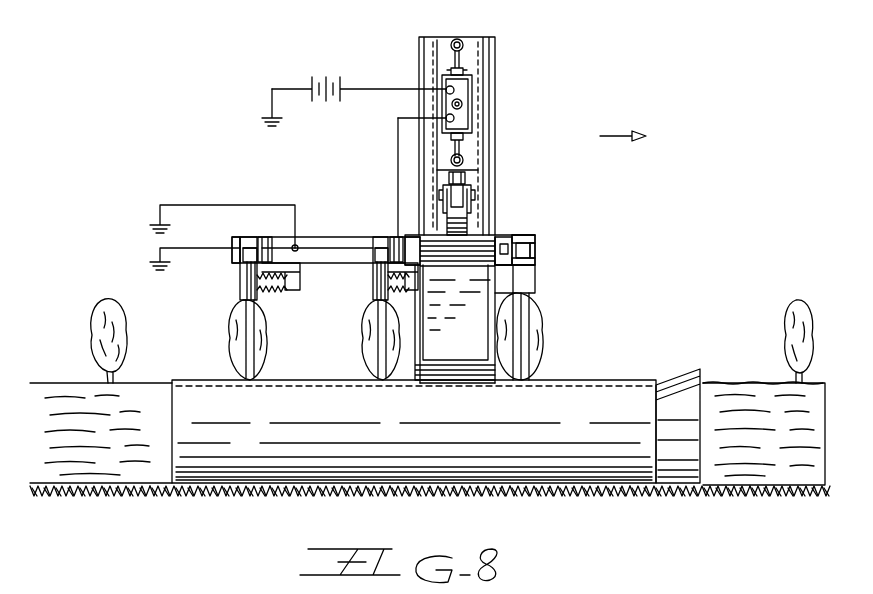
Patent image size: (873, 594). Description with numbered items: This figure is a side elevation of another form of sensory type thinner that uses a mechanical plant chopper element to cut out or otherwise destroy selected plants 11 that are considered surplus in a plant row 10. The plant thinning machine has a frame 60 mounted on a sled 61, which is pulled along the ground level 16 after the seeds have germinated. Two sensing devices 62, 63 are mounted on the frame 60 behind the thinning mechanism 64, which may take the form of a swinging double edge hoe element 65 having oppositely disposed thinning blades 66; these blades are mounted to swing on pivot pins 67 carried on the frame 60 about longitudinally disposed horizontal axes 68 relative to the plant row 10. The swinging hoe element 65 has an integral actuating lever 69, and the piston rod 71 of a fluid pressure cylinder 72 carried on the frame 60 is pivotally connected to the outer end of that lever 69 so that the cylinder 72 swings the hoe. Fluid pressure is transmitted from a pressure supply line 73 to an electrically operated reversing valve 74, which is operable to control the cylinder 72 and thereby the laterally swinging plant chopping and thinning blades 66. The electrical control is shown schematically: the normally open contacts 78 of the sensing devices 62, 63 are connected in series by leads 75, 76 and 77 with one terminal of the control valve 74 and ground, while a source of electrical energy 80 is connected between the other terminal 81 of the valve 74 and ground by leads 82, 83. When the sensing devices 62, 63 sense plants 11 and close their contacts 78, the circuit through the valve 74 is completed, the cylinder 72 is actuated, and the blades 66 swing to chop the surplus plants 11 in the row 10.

The plant row 10 is at (729, 383).
The ground level 16 is at (764, 383).
The sled 61 is at (652, 384).
The plants 11 is at (128, 334).
The fluid pressure cylinder 72 is at (496, 112).
The terminal 81 is at (442, 78).
The pressure supply line 73 is at (463, 103).
The electrically operated reversing valve 74 is at (470, 125).
The piston rod 71 is at (466, 178).
The actuating lever 69 is at (470, 224).
The lead 77 is at (398, 186).
The lead 82 is at (381, 90).
The source of electrical energy 80 is at (342, 82).
The lead 83 is at (272, 100).
The lead 76 is at (318, 246).
The lead 75 is at (210, 251).
The normally open contacts 78 is at (264, 237).
The sensing device 63 is at (243, 289).
The sensing device 62 is at (374, 292).
The thinning mechanism 64 is at (511, 239).
The pivot pin 67 is at (520, 241).
The longitudinally disposed horizontal axis 68 is at (535, 250).
The frame 60 is at (536, 279).
The swinging double edge hoe element 65 is at (495, 300).
The thinning blades 66 is at (414, 332).